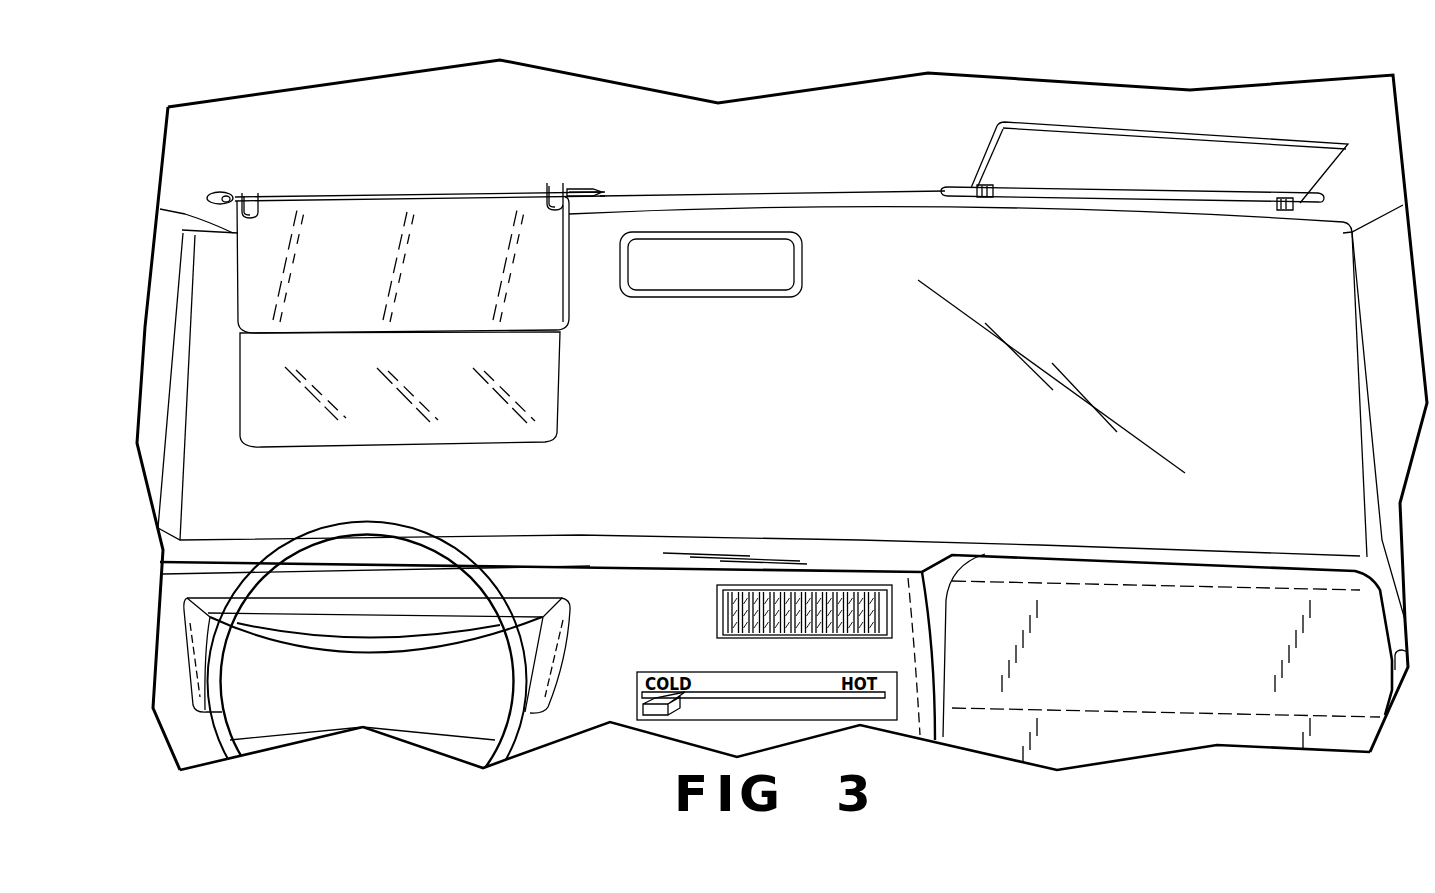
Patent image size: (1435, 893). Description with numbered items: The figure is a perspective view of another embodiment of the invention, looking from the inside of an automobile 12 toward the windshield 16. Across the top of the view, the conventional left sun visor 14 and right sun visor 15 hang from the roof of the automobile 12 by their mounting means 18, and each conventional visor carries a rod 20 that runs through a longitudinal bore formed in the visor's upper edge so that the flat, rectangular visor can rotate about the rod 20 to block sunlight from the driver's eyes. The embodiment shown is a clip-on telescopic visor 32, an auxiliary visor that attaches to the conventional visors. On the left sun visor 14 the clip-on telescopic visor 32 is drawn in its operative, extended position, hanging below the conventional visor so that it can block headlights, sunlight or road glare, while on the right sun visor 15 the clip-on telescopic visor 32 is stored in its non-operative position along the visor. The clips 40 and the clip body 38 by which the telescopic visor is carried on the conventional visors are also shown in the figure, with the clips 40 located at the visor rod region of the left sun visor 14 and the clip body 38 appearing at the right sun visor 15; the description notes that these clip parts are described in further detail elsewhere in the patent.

The automobile 12 is at (782, 397).
The left sun visor 14 is at (420, 218).
The right sun visor 15 is at (1144, 149).
The windshield 16 is at (980, 376).
The mounting means 18 is at (230, 171).
The rod 20 is at (598, 164).
The clip-on telescopic visor 32 is at (680, 313).
The clip body 38 is at (1135, 238).
The clips 40 is at (402, 166).